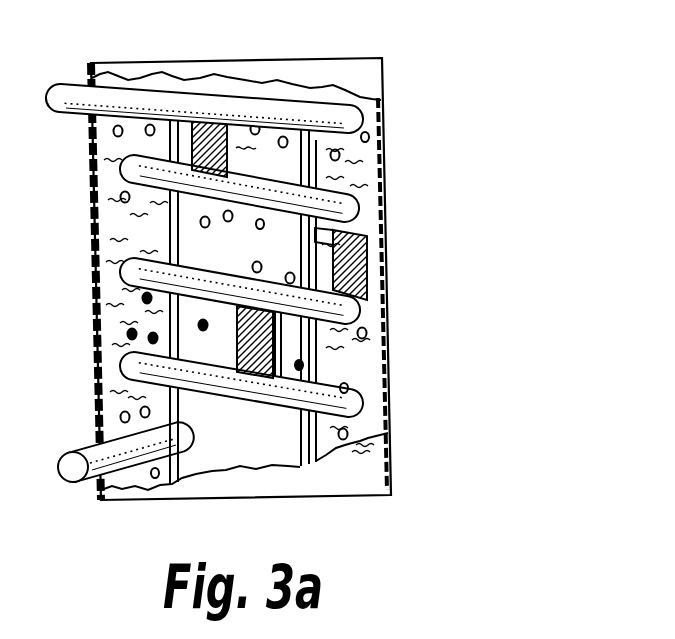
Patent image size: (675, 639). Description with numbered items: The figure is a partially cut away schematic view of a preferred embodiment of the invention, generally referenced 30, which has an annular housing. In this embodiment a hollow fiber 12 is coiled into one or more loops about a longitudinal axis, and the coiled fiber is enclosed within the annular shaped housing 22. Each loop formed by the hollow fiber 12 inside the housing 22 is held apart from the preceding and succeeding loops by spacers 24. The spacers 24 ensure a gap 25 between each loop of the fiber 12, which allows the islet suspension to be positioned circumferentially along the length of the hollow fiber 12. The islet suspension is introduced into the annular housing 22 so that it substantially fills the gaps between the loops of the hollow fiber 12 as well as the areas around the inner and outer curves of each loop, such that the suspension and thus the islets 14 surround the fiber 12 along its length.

The annular housing 22 is at (344, 59).
The hollow fiber 12 is at (68, 114).
The islets 14 is at (142, 409).
The spacers 24 is at (228, 159).
The gap 25 is at (352, 168).
The embodiment 30 is at (526, 204).